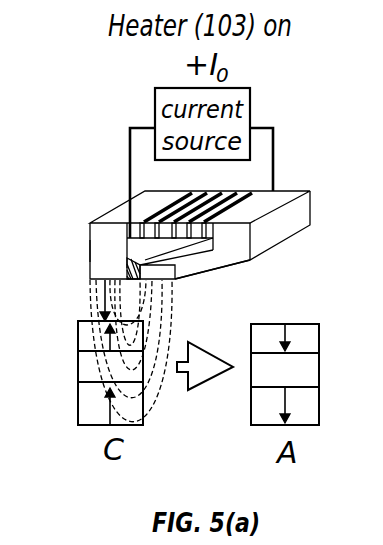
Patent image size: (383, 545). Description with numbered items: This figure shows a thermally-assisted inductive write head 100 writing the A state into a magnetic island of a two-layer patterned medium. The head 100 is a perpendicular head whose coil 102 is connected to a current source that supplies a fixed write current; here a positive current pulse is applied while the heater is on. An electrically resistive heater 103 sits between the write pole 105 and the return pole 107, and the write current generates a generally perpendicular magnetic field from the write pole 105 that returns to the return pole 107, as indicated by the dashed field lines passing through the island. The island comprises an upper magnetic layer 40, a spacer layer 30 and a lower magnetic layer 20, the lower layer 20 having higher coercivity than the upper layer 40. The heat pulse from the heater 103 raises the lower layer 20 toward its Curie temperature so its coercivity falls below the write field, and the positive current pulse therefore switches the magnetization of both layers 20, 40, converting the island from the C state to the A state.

The thermally-assisted inductive write head 100 is at (288, 196).
The coil 102 is at (175, 202).
The electrically resistive heater 103 is at (128, 264).
The write pole 105 is at (97, 252).
The return pole 107 is at (203, 268).
The upper magnetic layer 40 is at (78, 337).
The spacer layer 30 is at (78, 368).
The lower magnetic layer 20 is at (78, 403).